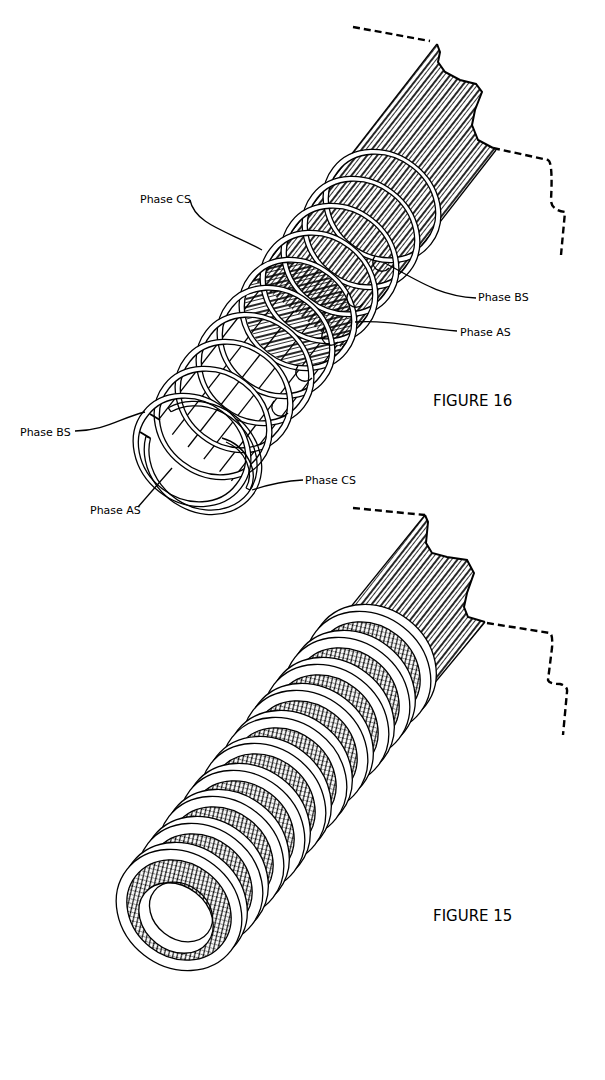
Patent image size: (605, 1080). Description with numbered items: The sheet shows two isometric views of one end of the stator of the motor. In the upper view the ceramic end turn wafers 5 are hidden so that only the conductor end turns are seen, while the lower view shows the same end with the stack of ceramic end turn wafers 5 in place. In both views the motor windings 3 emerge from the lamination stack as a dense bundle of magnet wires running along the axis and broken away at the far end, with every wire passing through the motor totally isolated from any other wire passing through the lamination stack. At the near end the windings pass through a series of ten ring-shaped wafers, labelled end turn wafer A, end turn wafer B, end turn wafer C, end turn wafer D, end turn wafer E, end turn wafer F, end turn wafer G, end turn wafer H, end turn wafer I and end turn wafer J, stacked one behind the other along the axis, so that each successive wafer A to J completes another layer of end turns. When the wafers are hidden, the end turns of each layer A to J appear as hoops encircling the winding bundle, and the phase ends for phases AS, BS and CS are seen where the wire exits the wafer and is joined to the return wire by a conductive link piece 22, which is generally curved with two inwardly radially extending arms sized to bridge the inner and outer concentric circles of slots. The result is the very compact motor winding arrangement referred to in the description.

In FIG. 16, the motor windings 3 is at (400, 118).
In FIG. 15, the motor windings 3 is at (453, 682).
In FIG. 15, the ceramic end turn wafers 5 is at (237, 863).
In FIG. 16, the conductive link piece 22 is at (182, 456).
In FIG. 15, the conductive link piece 22 is at (181, 934).
In FIG. 16, the end turn wafer A is at (327, 163).
In FIG. 15, the end turn wafer A is at (310, 632).
In FIG. 16, the end turn wafer B is at (303, 190).
In FIG. 15, the end turn wafer B is at (280, 668).
In FIG. 16, the end turn wafer C is at (287, 215).
In FIG. 15, the end turn wafer C is at (262, 690).
In FIG. 16, the end turn wafer D is at (263, 245).
In FIG. 15, the end turn wafer D is at (240, 718).
In FIG. 16, the end turn wafer E is at (243, 270).
In FIG. 15, the end turn wafer E is at (223, 747).
In FIG. 16, the end turn wafer F is at (218, 295).
In FIG. 15, the end turn wafer F is at (200, 772).
In FIG. 16, the end turn wafer G is at (200, 325).
In FIG. 15, the end turn wafer G is at (182, 797).
In FIG. 16, the end turn wafer H is at (182, 348).
In FIG. 15, the end turn wafer H is at (163, 820).
In FIG. 16, the end turn wafer I is at (158, 378).
In FIG. 15, the end turn wafer I is at (143, 842).
In FIG. 16, the end turn wafer J is at (137, 407).
In FIG. 15, the end turn wafer J is at (125, 868).